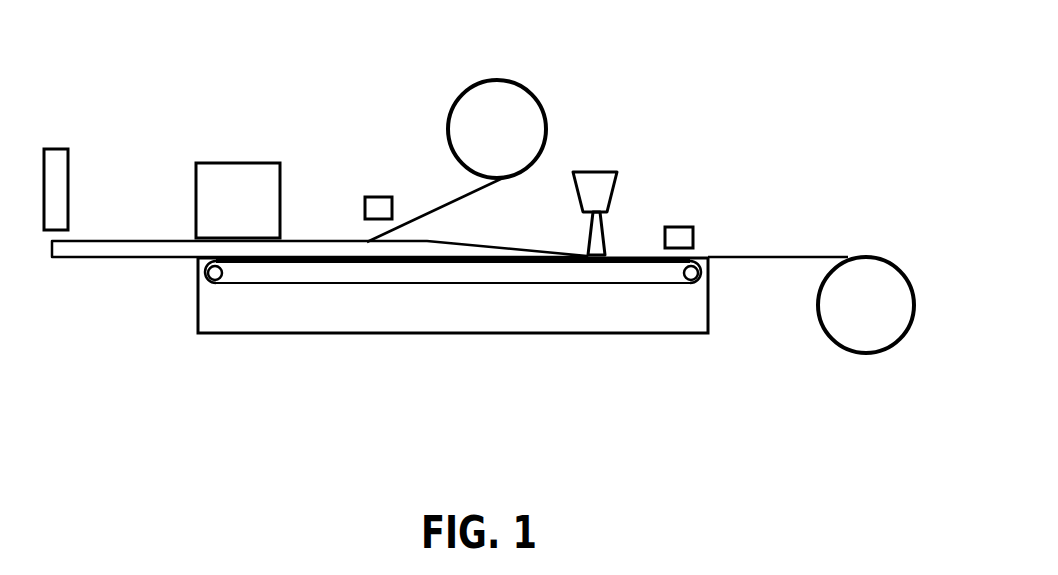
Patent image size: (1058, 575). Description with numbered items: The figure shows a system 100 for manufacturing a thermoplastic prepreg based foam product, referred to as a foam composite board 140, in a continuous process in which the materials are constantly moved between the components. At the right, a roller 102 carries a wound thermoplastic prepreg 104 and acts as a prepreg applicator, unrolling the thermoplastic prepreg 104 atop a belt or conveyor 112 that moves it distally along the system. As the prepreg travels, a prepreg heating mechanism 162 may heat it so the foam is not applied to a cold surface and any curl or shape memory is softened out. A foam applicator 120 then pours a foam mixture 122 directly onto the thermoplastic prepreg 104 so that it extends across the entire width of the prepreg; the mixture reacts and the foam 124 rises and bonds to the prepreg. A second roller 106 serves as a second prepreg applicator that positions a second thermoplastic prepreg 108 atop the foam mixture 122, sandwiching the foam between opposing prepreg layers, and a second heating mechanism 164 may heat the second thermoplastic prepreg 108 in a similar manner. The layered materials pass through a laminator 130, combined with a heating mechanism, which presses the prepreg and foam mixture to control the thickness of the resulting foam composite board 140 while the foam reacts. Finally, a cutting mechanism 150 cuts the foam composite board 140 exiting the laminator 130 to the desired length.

The system 100 is at (788, 146).
The roller 102 is at (870, 313).
The thermoplastic prepreg 104 is at (790, 257).
The second roller 106 is at (505, 118).
The second thermoplastic prepreg 108 is at (418, 215).
The belt or conveyor 112 is at (391, 283).
The foam applicator 120 is at (613, 172).
The foam mixture 122 is at (607, 238).
The foam material 124 is at (532, 232).
The laminator 130 is at (243, 178).
The foam composite board 140 is at (113, 282).
The cutting mechanism 150 is at (68, 172).
The prepreg heating mechanism 162 is at (693, 240).
The second heating mechanism 164 is at (365, 197).